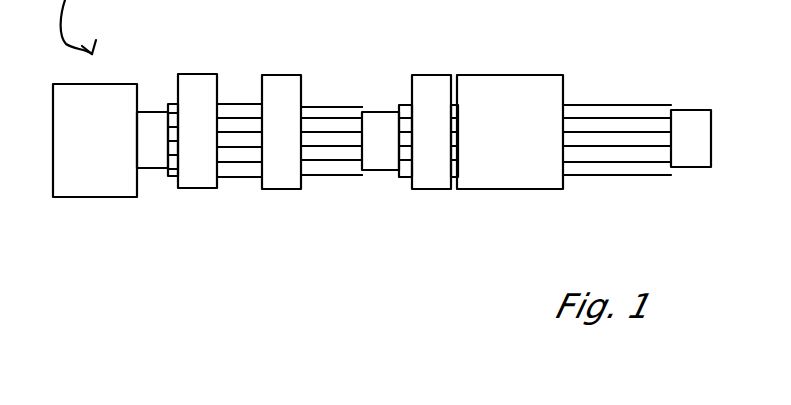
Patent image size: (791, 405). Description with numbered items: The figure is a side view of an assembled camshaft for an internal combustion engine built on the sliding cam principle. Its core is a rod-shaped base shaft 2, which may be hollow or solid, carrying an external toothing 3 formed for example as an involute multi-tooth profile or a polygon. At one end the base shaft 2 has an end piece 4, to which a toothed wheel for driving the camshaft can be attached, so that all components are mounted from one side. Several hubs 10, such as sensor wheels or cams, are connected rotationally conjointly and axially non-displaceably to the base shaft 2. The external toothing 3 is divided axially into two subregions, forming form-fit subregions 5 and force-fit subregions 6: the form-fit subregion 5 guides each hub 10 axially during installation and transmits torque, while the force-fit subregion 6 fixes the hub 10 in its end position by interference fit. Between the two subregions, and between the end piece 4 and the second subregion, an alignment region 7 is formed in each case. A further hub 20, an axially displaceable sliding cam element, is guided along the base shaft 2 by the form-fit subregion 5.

The base shaft 2 is at (700, 127).
The external toothing 3 is at (653, 99).
The end piece 4 is at (110, 183).
The form-fit subregion 5 is at (347, 174).
The force-fit subregion 6 is at (347, 174).
The alignment region 7 is at (150, 123).
The hub 10 is at (193, 85).
The further hub 20 is at (532, 88).